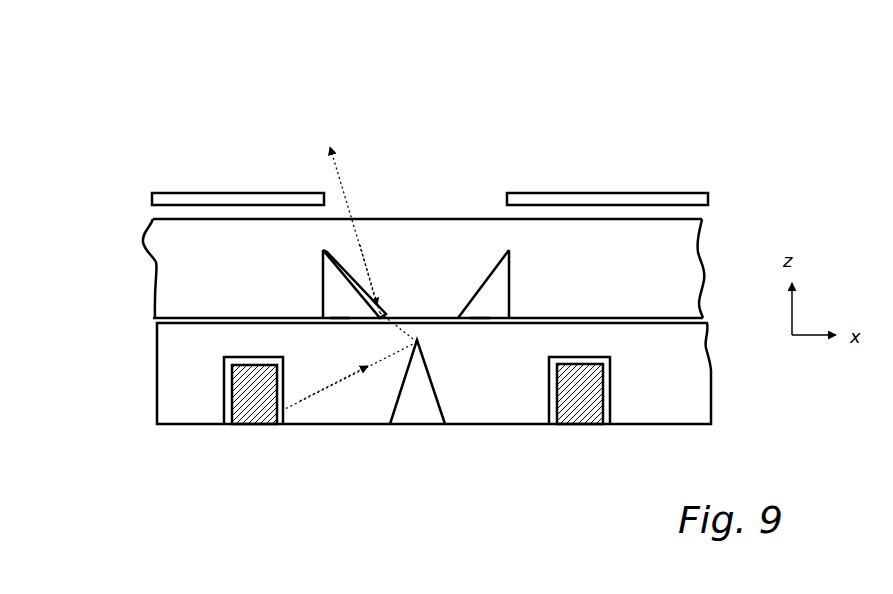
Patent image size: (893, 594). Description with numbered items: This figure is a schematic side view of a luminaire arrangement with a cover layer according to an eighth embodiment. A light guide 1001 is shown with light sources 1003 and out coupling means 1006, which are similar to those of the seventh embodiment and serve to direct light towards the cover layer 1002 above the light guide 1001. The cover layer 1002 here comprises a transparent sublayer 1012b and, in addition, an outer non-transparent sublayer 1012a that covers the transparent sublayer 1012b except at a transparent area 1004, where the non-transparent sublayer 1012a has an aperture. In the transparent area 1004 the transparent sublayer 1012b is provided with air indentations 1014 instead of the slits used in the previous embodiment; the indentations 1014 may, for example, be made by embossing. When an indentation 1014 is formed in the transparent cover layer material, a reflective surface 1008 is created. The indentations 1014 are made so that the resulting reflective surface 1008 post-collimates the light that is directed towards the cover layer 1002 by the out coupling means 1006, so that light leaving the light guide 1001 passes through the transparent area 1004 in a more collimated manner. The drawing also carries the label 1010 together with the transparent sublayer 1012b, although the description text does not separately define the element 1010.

The light guide 1001 is at (498, 403).
The cover layer 1002 is at (152, 202).
The light sources 1003 is at (252, 420).
The transparent area 1004 is at (388, 168).
The out coupling means 1006 is at (410, 440).
The reflective surface 1008 is at (480, 271).
The top layer 1010 is at (575, 168).
The non-transparent sublayer 1012a is at (207, 194).
The transparent sublayer 1012b is at (443, 220).
The indentations 1014 is at (340, 314).